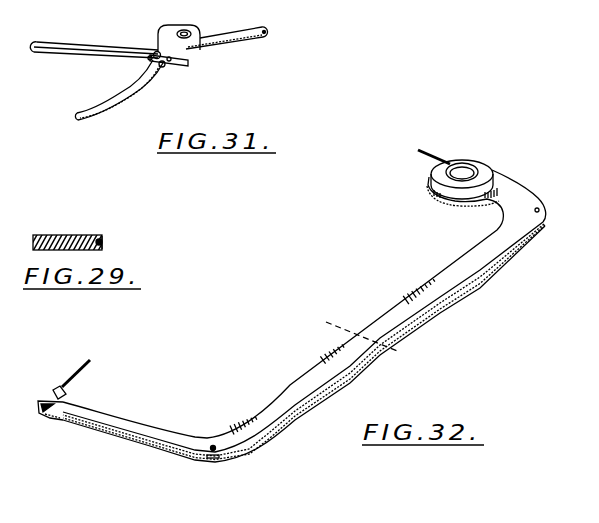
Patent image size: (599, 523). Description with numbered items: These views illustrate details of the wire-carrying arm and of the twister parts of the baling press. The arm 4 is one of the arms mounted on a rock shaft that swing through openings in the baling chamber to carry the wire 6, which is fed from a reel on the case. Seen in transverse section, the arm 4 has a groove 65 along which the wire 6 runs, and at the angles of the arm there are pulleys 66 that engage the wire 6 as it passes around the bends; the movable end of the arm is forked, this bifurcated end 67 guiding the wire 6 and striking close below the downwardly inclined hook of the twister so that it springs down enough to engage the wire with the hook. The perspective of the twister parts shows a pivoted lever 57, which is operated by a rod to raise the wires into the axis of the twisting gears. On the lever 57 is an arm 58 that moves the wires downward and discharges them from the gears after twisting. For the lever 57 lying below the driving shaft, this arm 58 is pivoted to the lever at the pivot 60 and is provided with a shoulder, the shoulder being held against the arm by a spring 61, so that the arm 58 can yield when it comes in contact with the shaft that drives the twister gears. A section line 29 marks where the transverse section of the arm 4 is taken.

In FIG. 29, the arm 4 is at (53, 235).
In FIG. 32, the arm 4 is at (393, 306).
In FIG. 29, the wire 6 is at (104, 242).
In FIG. 32, the wire 6 is at (44, 401).
In FIG. 32, the section line 29 is at (362, 337).
In FIG. 31, the pivoted lever 57 is at (228, 41).
In FIG. 31, the arm 58 is at (86, 43).
In FIG. 31, the pivot 60 is at (158, 50).
In FIG. 31, the spring 61 is at (166, 62).
In FIG. 29, the groove 65 is at (100, 239).
In FIG. 32, the pulley 66 is at (542, 211).
In FIG. 32, the bifurcated end of arm 67 is at (66, 395).